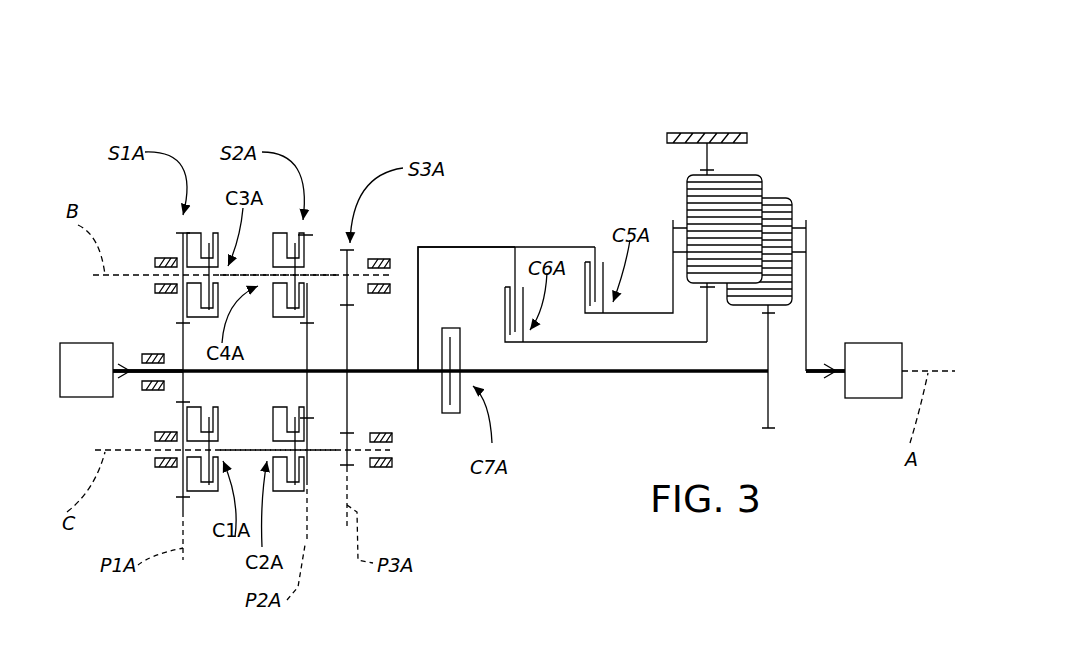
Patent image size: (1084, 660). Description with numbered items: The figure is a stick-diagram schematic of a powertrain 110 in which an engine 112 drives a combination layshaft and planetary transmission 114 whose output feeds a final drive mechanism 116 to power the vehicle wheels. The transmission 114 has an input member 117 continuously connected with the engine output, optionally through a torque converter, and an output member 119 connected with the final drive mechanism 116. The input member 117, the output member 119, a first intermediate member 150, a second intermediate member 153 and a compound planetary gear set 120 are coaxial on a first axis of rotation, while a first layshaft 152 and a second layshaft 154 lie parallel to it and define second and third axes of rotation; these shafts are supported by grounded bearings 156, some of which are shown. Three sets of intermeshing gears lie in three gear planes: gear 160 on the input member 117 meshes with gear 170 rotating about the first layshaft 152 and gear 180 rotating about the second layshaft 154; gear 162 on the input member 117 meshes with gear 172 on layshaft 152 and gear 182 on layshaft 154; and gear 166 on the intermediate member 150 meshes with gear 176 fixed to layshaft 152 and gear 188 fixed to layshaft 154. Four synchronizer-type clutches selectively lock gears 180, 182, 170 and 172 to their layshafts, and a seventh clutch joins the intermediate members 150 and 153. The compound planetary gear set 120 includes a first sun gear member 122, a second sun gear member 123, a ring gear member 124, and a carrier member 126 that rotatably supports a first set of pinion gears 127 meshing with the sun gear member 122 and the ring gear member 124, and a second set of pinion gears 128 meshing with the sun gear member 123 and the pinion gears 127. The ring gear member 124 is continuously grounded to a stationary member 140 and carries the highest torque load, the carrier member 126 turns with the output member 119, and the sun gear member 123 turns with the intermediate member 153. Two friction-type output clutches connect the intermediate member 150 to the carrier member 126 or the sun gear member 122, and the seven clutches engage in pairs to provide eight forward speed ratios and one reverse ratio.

The powertrain 110 is at (613, 77).
The engine 112 is at (88, 343).
The combination layshaft and planetary transmission 114 is at (503, 85).
The final drive mechanism 116 is at (873, 343).
The input member 117 is at (138, 368).
The output member 119 is at (813, 374).
The compound planetary gear set 120 is at (812, 88).
The first sun gear member 122 is at (711, 290).
The second sun gear member 123 is at (768, 315).
The ring gear member 124 is at (706, 168).
The carrier member 126 is at (807, 218).
The first set of pinion gears 127 is at (725, 173).
The second set of pinion gears 128 is at (770, 200).
The stationary member 140 is at (705, 132).
The first intermediate member 150 is at (362, 368).
The first layshaft 152 is at (318, 272).
The second intermediate member 153 is at (607, 374).
The second layshaft 154 is at (313, 448).
The grounded bearings 156 is at (155, 262).
The gear 160 is at (183, 386).
The gear 162 is at (312, 392).
The gear 166 is at (347, 403).
The gear 170 is at (185, 235).
The gear 172 is at (308, 247).
The gear 176 is at (353, 262).
The gear 180 is at (183, 478).
The gear 182 is at (308, 470).
The gear 188 is at (350, 460).